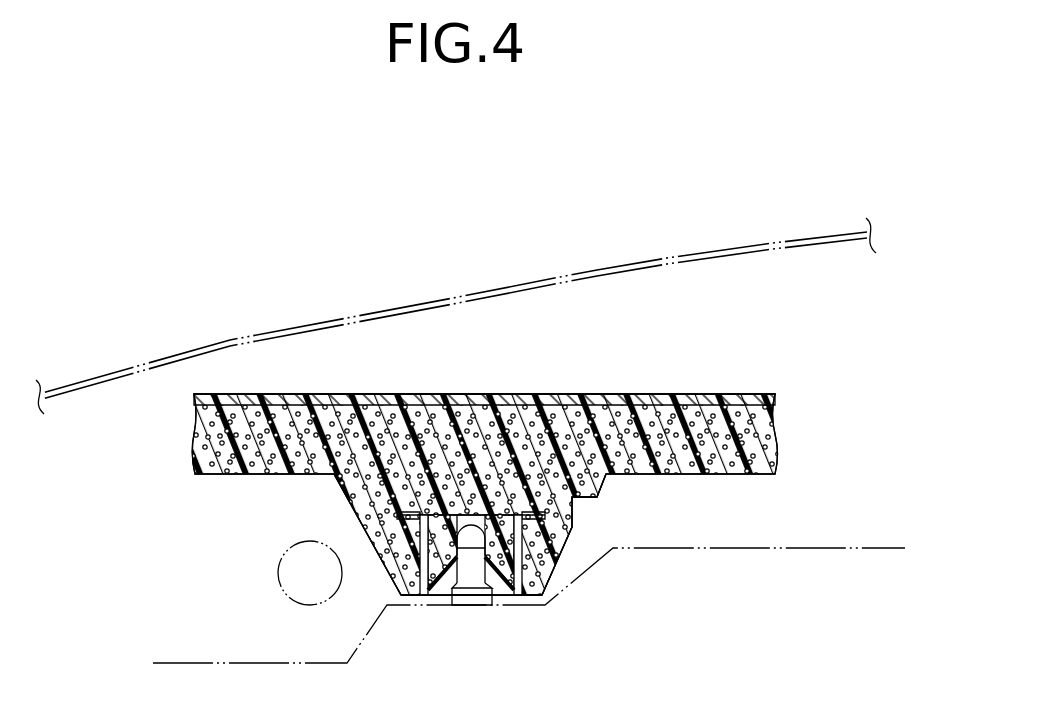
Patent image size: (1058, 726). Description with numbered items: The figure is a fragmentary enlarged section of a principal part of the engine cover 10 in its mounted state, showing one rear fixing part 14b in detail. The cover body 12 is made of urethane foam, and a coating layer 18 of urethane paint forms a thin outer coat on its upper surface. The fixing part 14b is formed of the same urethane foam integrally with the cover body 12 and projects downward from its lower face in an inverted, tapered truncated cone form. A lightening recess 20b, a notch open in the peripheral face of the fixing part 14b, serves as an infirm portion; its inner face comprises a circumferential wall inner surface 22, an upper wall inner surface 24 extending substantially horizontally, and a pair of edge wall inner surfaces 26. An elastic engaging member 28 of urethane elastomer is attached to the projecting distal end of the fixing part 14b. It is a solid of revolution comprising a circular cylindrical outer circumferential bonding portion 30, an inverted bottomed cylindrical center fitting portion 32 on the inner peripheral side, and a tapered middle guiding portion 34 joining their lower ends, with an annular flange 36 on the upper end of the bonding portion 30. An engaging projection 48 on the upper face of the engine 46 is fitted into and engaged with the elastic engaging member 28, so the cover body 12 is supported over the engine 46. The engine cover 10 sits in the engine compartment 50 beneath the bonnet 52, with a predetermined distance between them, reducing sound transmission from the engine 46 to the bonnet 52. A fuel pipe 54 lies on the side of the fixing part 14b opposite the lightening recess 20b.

The engine cover 10 is at (745, 371).
The cover body 12 is at (746, 481).
The fixing part 14b is at (343, 507).
The coating layer 18 is at (660, 394).
The lightening recess 20b is at (582, 519).
The circumferential wall inner surface 22 is at (579, 522).
The upper wall inner surface 24 is at (578, 494).
The edge wall inner surface 26 is at (583, 513).
The elastic engaging member 28 is at (433, 603).
The outer circumferential bonding portion 30 is at (420, 548).
The center fitting portion 32 is at (469, 524).
The middle guiding portion 34 is at (500, 575).
The flange 36 is at (527, 512).
The engine 46 is at (838, 557).
The engaging projection 48 is at (472, 584).
The engine compartment 50 is at (360, 368).
The bonnet 52 is at (597, 276).
The fuel pipe 54 is at (292, 568).